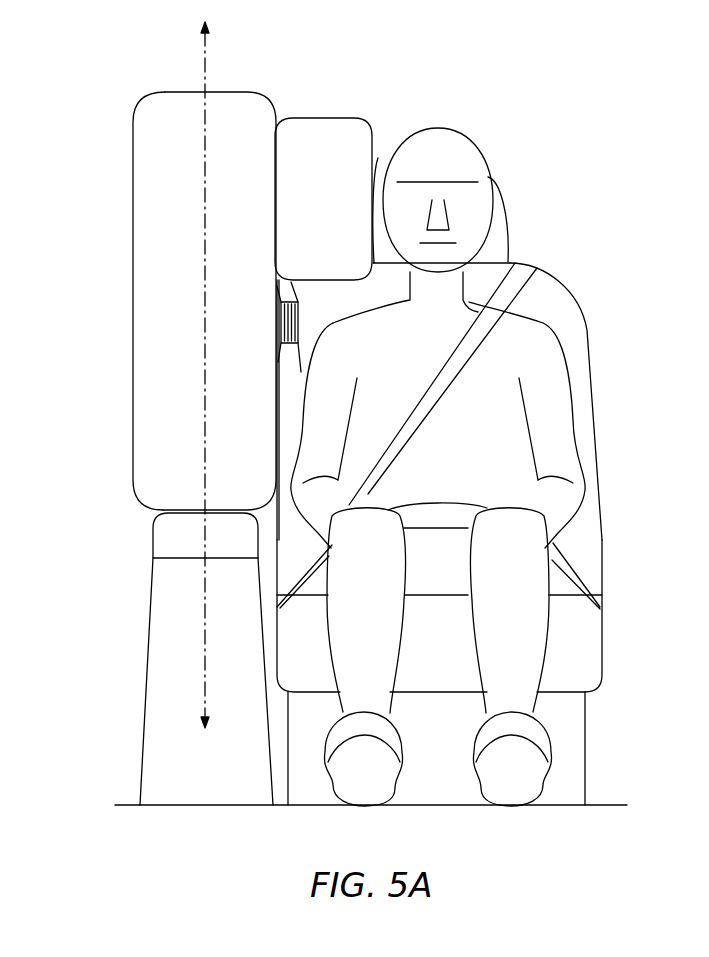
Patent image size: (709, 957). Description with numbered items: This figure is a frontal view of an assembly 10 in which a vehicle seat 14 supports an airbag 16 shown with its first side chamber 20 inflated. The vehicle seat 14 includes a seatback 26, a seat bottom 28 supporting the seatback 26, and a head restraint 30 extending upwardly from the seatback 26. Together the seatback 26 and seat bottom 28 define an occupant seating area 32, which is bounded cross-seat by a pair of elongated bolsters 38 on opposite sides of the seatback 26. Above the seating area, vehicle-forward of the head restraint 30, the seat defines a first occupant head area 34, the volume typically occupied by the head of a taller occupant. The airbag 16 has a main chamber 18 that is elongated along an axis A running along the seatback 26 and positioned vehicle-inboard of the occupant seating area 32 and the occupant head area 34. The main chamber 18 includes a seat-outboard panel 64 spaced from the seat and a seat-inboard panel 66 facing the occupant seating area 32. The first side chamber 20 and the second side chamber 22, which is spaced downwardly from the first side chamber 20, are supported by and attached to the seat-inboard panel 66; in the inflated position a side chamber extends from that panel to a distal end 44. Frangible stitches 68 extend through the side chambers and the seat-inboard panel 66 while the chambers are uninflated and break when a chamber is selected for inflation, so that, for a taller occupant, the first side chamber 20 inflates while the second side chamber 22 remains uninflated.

The assembly 10 is at (564, 171).
The vehicle seat 14 is at (484, 466).
The airbag 16 is at (215, 287).
The main chamber 18 is at (159, 301).
The first side chamber 20 is at (340, 118).
The second side chamber 22 is at (300, 317).
The seatback 26 is at (577, 348).
The seat bottom 28 is at (580, 647).
The head restraint 30 is at (510, 235).
The occupant seating area 32 is at (610, 471).
The first occupant head area 34 is at (476, 441).
The bolsters 38 is at (292, 550).
The distal ends 44 is at (377, 158).
The seat-outboard panel 64 is at (132, 272).
The seat-inboard panel 66 is at (278, 405).
The stitches 68 is at (284, 290).
The axis A is at (203, 65).